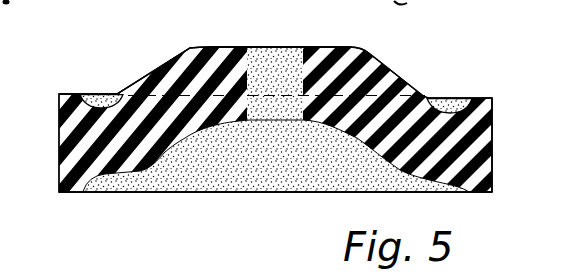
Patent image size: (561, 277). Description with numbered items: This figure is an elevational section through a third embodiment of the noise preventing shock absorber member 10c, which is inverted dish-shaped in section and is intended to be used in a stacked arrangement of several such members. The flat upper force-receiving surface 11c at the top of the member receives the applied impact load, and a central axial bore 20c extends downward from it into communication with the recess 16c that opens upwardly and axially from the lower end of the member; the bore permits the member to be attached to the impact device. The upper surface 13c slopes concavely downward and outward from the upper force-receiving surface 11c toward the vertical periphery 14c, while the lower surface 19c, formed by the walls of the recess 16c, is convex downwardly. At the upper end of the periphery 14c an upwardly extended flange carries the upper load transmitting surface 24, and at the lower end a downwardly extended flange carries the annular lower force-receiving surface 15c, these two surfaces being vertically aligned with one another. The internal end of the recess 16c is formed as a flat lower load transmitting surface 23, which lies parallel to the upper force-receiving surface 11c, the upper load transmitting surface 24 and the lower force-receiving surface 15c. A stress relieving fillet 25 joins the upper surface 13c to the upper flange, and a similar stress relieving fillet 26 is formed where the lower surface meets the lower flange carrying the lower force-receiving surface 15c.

The shock absorber member 10c is at (58, 145).
The upper force-receiving surface 11c is at (318, 49).
The upper surface 13c is at (160, 66).
The peripheral base side wall surface 14c is at (493, 145).
The lower force-receiving surface 15c is at (75, 193).
The recess 16c is at (276, 170).
The lower surface 19c is at (373, 152).
The central axial bore 20c is at (259, 54).
The lower load transmitting surface 23 is at (238, 124).
The upper load transmitting surface 24 is at (66, 94).
The stress relieving fillet 25 is at (91, 96).
The stress relieving fillet 26 is at (97, 180).